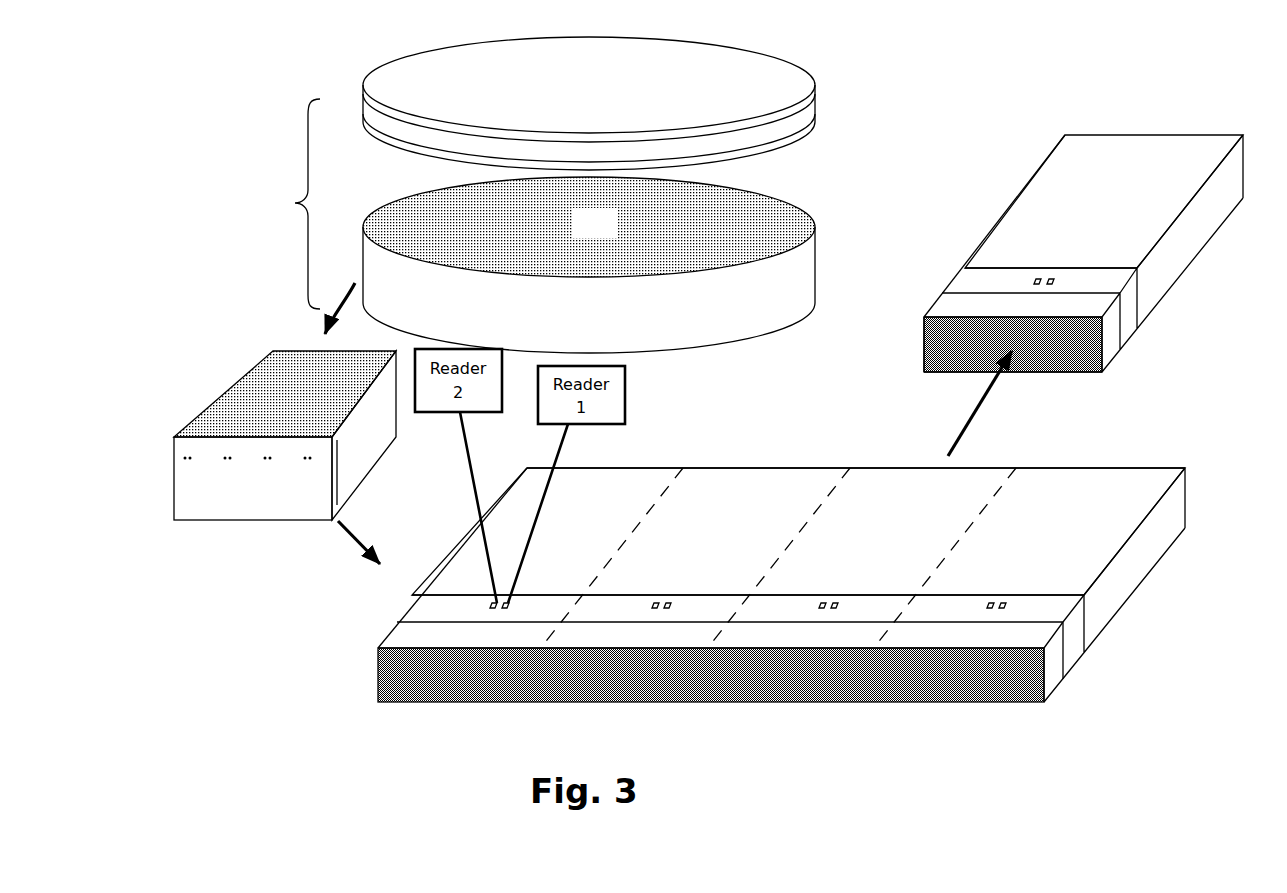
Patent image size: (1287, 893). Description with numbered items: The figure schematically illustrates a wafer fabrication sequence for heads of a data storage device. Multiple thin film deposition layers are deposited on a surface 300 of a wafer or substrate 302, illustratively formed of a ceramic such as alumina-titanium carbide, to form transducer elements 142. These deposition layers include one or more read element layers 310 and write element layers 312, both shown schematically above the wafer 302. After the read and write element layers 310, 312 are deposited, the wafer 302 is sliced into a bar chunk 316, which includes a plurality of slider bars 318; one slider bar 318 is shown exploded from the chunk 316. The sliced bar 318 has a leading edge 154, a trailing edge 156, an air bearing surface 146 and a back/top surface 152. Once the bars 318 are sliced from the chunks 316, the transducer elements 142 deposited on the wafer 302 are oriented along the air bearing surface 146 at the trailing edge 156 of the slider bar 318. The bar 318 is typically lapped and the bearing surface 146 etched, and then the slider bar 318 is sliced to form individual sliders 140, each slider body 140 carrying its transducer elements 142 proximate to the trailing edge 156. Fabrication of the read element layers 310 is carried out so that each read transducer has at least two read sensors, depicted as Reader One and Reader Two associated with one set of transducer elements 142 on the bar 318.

The slider 140 is at (810, 402).
The transducer elements 142 is at (301, 474).
The bearing surface 146 is at (848, 583).
The back/top surface 152 is at (1108, 622).
The leading edge 154 is at (737, 467).
The trailing edge 156 is at (923, 686).
The surface 300 is at (613, 237).
The wafer 302 is at (638, 265).
The read element layers 310 is at (820, 133).
The write element layers 312 is at (821, 91).
The bar chunk 316 is at (467, 396).
The slider bar 318 is at (174, 436).